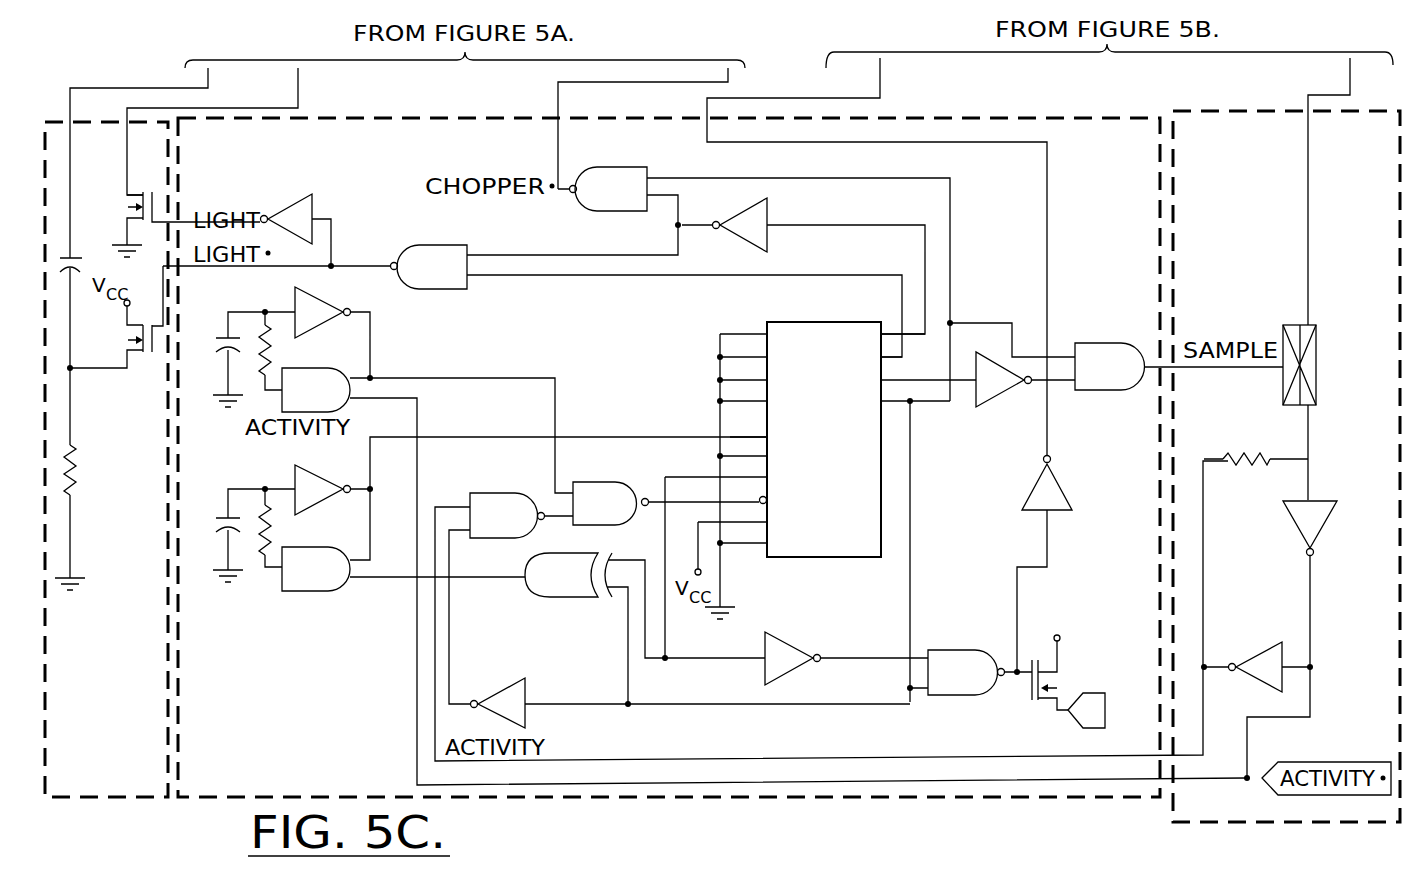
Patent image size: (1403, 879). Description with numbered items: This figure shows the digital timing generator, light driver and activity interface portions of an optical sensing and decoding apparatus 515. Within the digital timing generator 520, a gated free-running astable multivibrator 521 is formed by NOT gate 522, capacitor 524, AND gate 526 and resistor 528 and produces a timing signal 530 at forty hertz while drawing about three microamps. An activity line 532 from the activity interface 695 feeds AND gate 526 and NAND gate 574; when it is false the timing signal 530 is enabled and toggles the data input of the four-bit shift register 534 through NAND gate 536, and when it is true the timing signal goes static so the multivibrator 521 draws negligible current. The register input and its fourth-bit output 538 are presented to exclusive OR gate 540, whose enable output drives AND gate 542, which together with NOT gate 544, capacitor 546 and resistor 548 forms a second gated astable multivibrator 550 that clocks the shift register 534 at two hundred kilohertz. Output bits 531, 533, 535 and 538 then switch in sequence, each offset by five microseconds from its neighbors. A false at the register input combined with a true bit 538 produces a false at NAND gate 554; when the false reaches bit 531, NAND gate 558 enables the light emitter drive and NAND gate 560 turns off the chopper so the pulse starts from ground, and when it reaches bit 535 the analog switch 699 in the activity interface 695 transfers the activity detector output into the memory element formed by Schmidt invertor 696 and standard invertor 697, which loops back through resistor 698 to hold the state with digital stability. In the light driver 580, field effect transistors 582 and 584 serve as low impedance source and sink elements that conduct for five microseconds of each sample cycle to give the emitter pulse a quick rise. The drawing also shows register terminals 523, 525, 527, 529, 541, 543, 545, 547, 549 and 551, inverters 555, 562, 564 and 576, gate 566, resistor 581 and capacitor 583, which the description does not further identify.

The optical sensing and decoding apparatus 515 is at (1137, 808).
The digital timing generator circuit 520 is at (669, 457).
The gated free-running astable multivibrator 521 is at (428, 332).
The NOT gate 522 is at (323, 330).
The counter input 523 is at (766, 333).
The capacitor 524 is at (222, 359).
The counter input 525 is at (764, 356).
The AND gate 526 is at (344, 401).
The counter input 527 is at (764, 379).
The resistor 528 is at (288, 351).
The counter input 529 is at (764, 401).
The timing signal 530 is at (461, 422).
The output bit 531 is at (876, 333).
The activity line 532 is at (566, 453).
The output bit 533 is at (865, 356).
The four-bit shift register 534 is at (824, 439).
The output bit 535 is at (902, 379).
The NAND gate 536 is at (629, 516).
The fourth bit output 538 is at (889, 545).
The exclusive OR gate 540 is at (591, 588).
The counter input 541 is at (771, 436).
The AND gate 542 is at (344, 581).
The counter input 543 is at (764, 458).
The NOT gate 544 is at (317, 480).
The counter input 545 is at (738, 562).
The capacitor 546 is at (222, 535).
The counter input 547 is at (786, 501).
The resistor 548 is at (288, 528).
The counter input 549 is at (753, 543).
The gated astable multivibrator 550 is at (245, 630).
The counter input 551 is at (764, 544).
The NAND gate 554 is at (985, 686).
The inverter 555 is at (820, 662).
The NAND gate 558 is at (463, 278).
The NAND gate 560 is at (643, 201).
The inverter 562 is at (819, 265).
The inverter 564 is at (1025, 390).
The NAND gate 566 is at (1133, 379).
The NAND gate 574 is at (524, 529).
The inverter 576 is at (311, 226).
The light driver 580 is at (106, 459).
The resistor 581 is at (76, 479).
The field effect transistor 582 is at (116, 317).
The capacitor 583 is at (79, 291).
The field effect transistor 584 is at (168, 220).
The activity interface 695 is at (1286, 466).
The Schmidt invertor 696 is at (1290, 639).
The standard invertor 697 is at (1257, 658).
The resistor 698 is at (1256, 444).
The analog switch 699 is at (1274, 412).